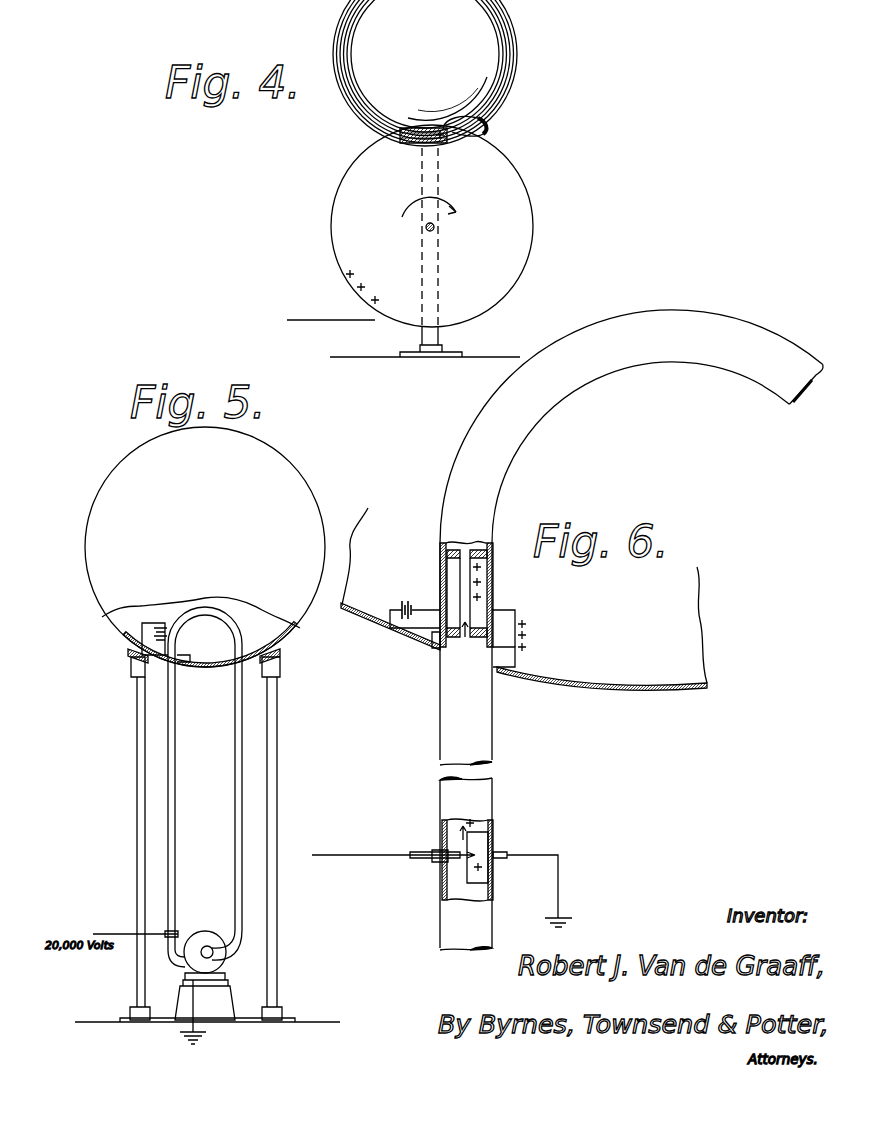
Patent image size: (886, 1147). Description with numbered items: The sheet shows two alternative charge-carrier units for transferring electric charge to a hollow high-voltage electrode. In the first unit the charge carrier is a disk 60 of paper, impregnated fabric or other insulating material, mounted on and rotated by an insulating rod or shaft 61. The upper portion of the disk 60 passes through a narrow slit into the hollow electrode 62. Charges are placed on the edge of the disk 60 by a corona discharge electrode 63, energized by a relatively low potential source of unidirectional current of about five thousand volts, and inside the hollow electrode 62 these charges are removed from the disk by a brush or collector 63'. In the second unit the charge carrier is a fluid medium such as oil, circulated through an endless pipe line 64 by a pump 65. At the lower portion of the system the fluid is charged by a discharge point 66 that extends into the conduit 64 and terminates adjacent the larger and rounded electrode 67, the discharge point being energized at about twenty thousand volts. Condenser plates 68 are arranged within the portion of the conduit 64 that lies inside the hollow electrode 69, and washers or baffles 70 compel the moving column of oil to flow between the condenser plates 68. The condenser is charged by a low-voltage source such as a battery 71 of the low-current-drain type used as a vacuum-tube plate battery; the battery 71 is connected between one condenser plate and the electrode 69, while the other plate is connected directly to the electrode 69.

In FIG. 4, the disk 60 is at (510, 180).
In FIG. 4, the insulating rod or shaft 61 is at (436, 228).
In FIG. 4, the hollow electrode 62 is at (517, 42).
In FIG. 4, the corona discharge electrode 63 is at (329, 300).
In FIG. 4, the brush or collector 63' is at (469, 154).
In FIG. 5, the endless pipe line 64 is at (243, 735).
In FIG. 6, the endless pipe line 64 is at (493, 577).
In FIG. 5, the pump 65 is at (208, 933).
In FIG. 6, the discharge point 66 is at (446, 866).
In FIG. 6, the electrode 67 is at (479, 843).
In FIG. 6, the condenser plates 68 is at (470, 552).
In FIG. 5, the hollow electrode 69 is at (298, 483).
In FIG. 6, the hollow electrode 69 is at (594, 679).
In FIG. 6, the washers or baffles 70 is at (440, 548).
In FIG. 5, the battery 71 is at (162, 625).
In FIG. 6, the battery 71 is at (419, 601).